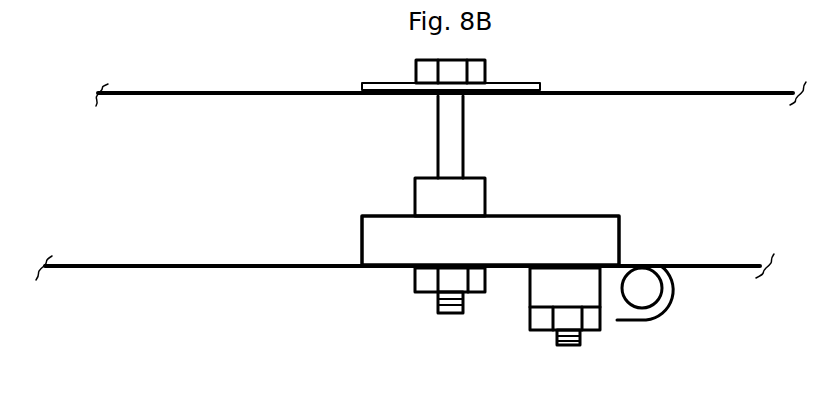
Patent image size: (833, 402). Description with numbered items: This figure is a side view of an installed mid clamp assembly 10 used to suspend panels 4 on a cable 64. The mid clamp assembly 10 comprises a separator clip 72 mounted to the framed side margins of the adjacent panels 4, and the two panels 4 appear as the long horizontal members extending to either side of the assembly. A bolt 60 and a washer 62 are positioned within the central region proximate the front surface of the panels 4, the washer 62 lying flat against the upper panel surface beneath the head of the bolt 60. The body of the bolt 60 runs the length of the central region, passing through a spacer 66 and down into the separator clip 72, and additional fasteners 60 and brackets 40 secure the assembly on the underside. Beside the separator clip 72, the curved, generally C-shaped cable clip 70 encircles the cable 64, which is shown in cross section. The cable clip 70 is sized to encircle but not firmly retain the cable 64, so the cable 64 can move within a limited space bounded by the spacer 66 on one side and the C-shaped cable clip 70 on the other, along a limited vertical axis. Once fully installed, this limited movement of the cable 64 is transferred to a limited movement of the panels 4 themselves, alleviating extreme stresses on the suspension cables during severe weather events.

The panel 4 is at (226, 78).
The mid clamp assembly 10 is at (382, 315).
The bracket 40 is at (427, 292).
The bolt 60 is at (486, 72).
The washer 62 is at (540, 84).
The cable 64 is at (670, 262).
The spacer 66 is at (468, 205).
The cable clip 70 is at (663, 317).
The separator clip 72 is at (510, 251).